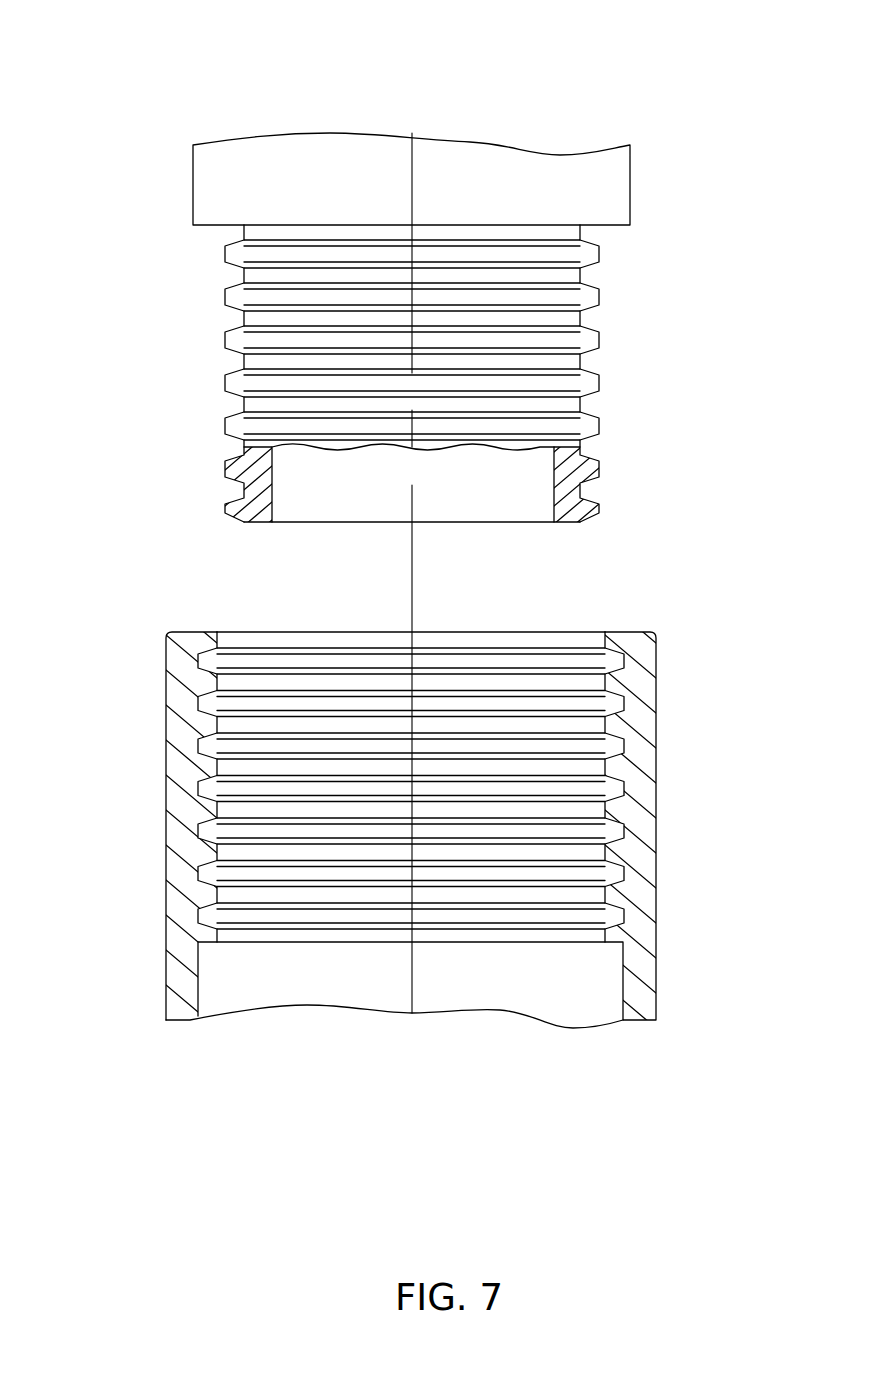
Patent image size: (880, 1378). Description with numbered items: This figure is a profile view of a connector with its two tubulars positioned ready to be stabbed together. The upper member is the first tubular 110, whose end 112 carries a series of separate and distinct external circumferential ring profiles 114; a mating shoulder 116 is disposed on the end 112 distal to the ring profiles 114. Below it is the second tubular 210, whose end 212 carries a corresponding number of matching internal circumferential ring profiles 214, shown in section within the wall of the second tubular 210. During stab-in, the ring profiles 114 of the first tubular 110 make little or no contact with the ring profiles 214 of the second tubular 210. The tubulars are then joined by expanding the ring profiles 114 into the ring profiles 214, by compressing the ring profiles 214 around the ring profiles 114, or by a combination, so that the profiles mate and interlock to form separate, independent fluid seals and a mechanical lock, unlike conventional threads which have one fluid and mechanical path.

The first tubular 110 is at (222, 185).
The end of first tubular 112 is at (563, 521).
The external circumferential ring profiles 114 is at (599, 378).
The mating shoulder 116 is at (613, 227).
The second tubular 210 is at (180, 811).
The end of second tubular 212 is at (186, 632).
The internal circumferential ring profiles 214 is at (620, 880).